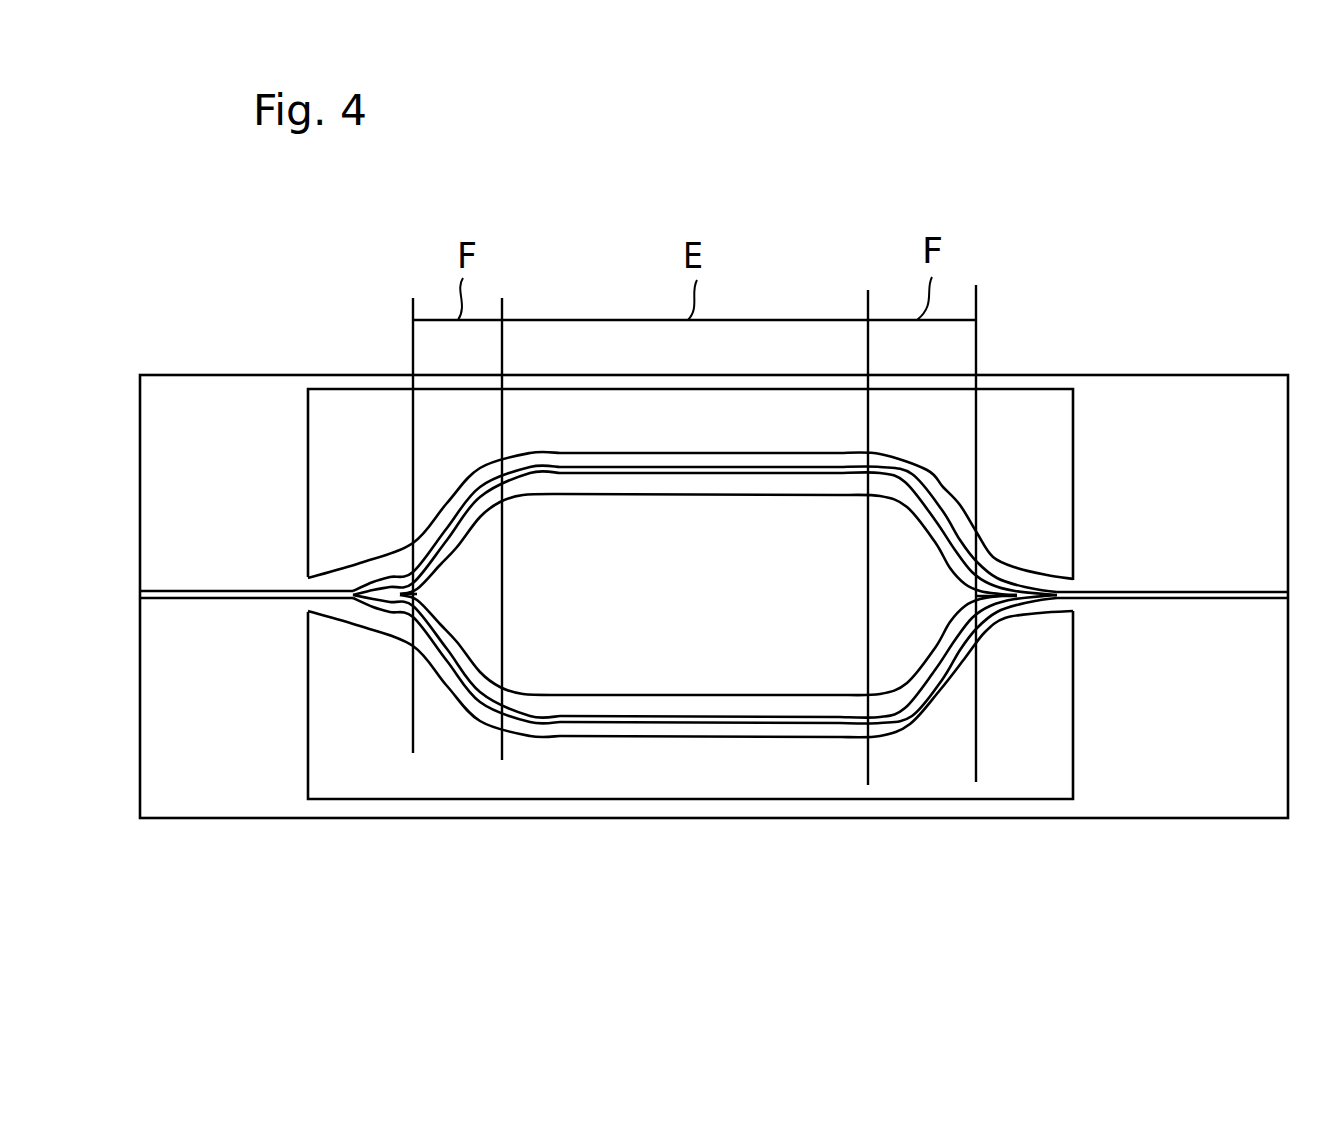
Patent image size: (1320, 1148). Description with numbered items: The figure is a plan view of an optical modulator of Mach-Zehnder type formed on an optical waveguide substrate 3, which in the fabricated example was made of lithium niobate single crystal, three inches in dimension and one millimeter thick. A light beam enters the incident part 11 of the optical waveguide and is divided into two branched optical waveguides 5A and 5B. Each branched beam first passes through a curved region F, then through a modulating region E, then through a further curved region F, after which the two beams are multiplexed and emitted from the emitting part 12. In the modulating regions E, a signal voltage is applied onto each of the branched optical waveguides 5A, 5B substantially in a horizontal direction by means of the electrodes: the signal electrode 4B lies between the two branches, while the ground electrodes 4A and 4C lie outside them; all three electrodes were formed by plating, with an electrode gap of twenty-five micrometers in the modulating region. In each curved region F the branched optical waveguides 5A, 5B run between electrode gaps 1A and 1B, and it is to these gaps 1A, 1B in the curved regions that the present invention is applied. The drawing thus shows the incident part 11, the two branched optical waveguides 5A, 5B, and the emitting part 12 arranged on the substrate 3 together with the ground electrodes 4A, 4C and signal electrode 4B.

The gap 1A is at (459, 557).
The gap 1B is at (457, 485).
The optical waveguide substrate 3 is at (1212, 395).
The ground electrode 4A is at (398, 468).
The signal electrode 4B is at (722, 617).
The ground electrode 4C is at (400, 777).
The branched optical waveguide 5A is at (643, 468).
The branched optical waveguide 5B is at (673, 726).
The incident part 11 is at (216, 590).
The emitting part 12 is at (1207, 590).